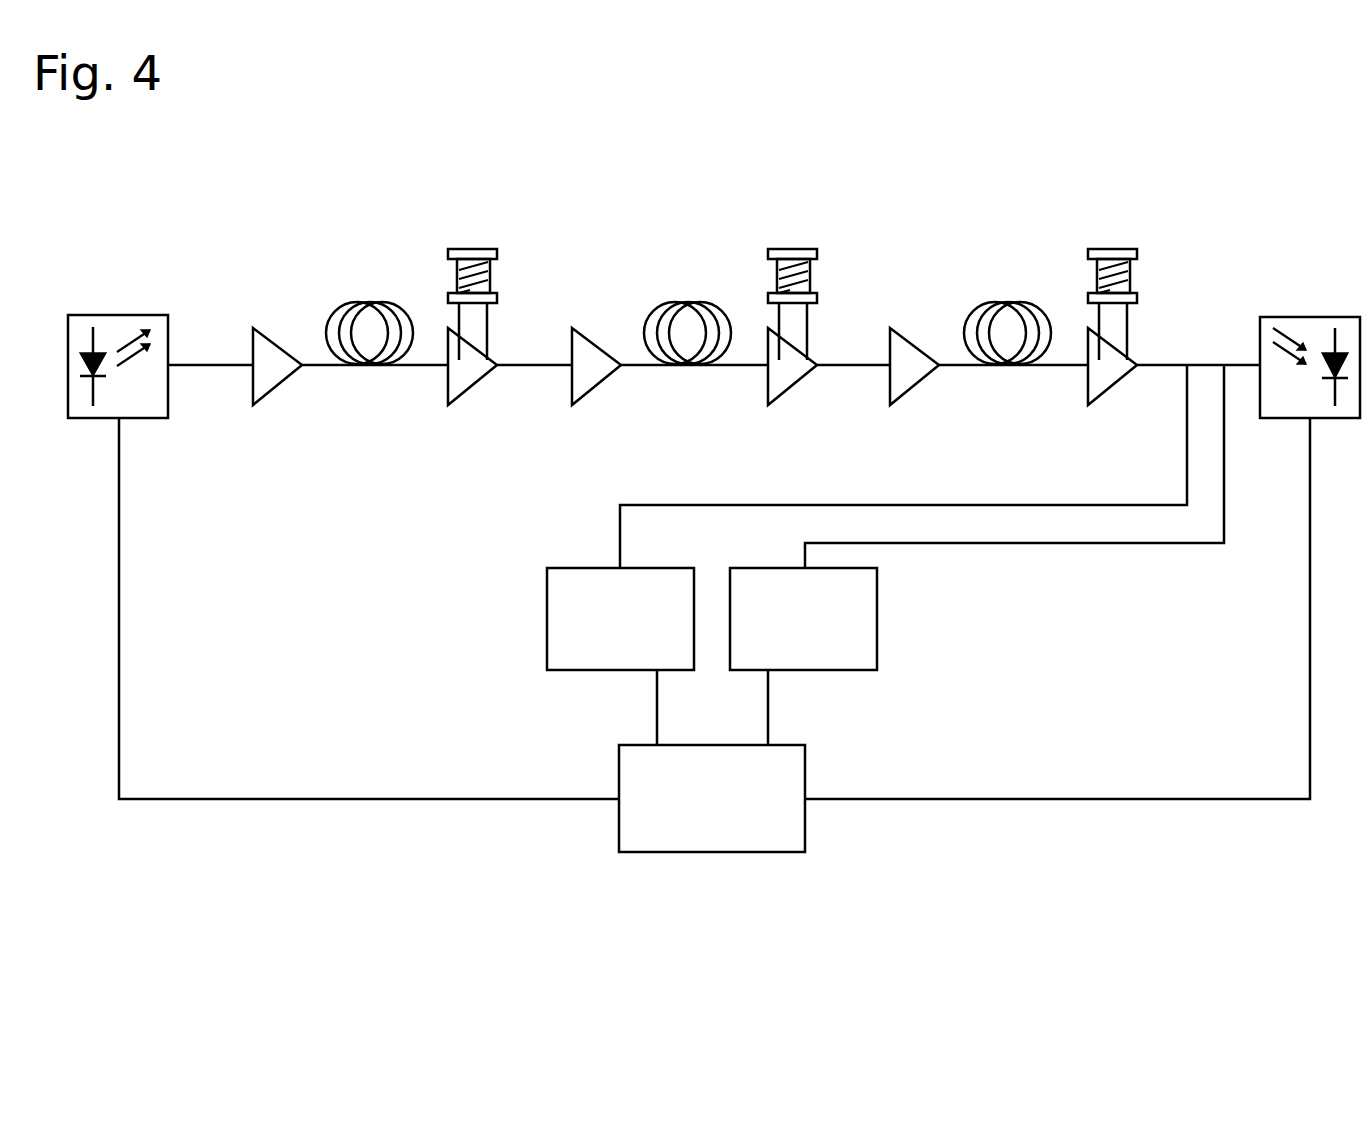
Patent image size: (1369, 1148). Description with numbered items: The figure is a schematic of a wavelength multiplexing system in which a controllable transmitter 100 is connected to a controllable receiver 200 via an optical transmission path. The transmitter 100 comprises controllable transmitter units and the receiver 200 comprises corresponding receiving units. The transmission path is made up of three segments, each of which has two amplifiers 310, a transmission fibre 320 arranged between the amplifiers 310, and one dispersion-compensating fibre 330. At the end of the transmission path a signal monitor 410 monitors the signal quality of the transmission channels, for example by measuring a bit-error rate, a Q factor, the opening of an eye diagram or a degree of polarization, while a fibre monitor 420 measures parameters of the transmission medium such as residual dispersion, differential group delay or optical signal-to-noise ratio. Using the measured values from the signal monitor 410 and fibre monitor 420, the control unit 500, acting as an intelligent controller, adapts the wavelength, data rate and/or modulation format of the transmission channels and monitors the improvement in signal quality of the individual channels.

The controllable transmitter 100 is at (140, 317).
The controllable receiver 200 is at (1320, 317).
The amplifier 310 is at (270, 390).
The transmission fibre 320 is at (347, 300).
The dispersion-compensating fibre 330 is at (470, 248).
The signal monitor 410 is at (547, 605).
The fibre monitor 420 is at (877, 605).
The control unit 500 is at (700, 852).